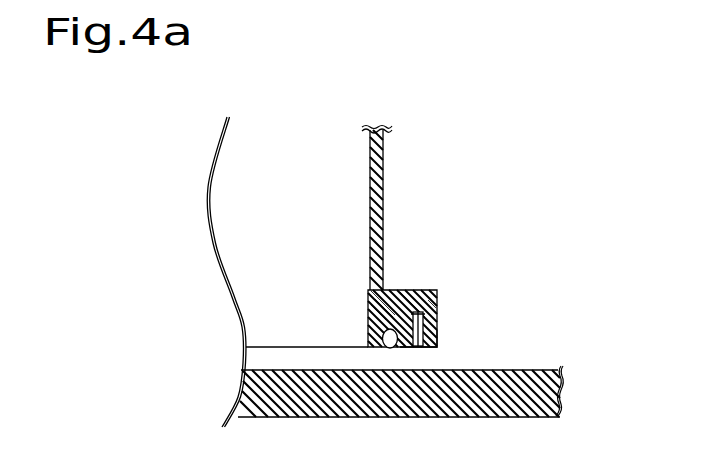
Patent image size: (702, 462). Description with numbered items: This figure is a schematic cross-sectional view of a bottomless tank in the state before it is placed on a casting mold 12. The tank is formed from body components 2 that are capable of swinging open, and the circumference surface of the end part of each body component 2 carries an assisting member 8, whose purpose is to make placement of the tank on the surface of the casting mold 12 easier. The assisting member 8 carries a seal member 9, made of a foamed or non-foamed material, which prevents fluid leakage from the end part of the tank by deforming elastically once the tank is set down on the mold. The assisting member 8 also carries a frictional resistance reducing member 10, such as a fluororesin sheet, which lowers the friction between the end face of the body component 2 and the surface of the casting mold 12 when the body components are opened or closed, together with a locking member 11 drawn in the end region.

The body component 2 is at (380, 222).
The assisting member 8 is at (406, 295).
The seal member 9 is at (373, 332).
The frictional resistance reducing member 10 is at (438, 338).
The locking member 11 is at (437, 307).
The casting mold 12 is at (457, 390).